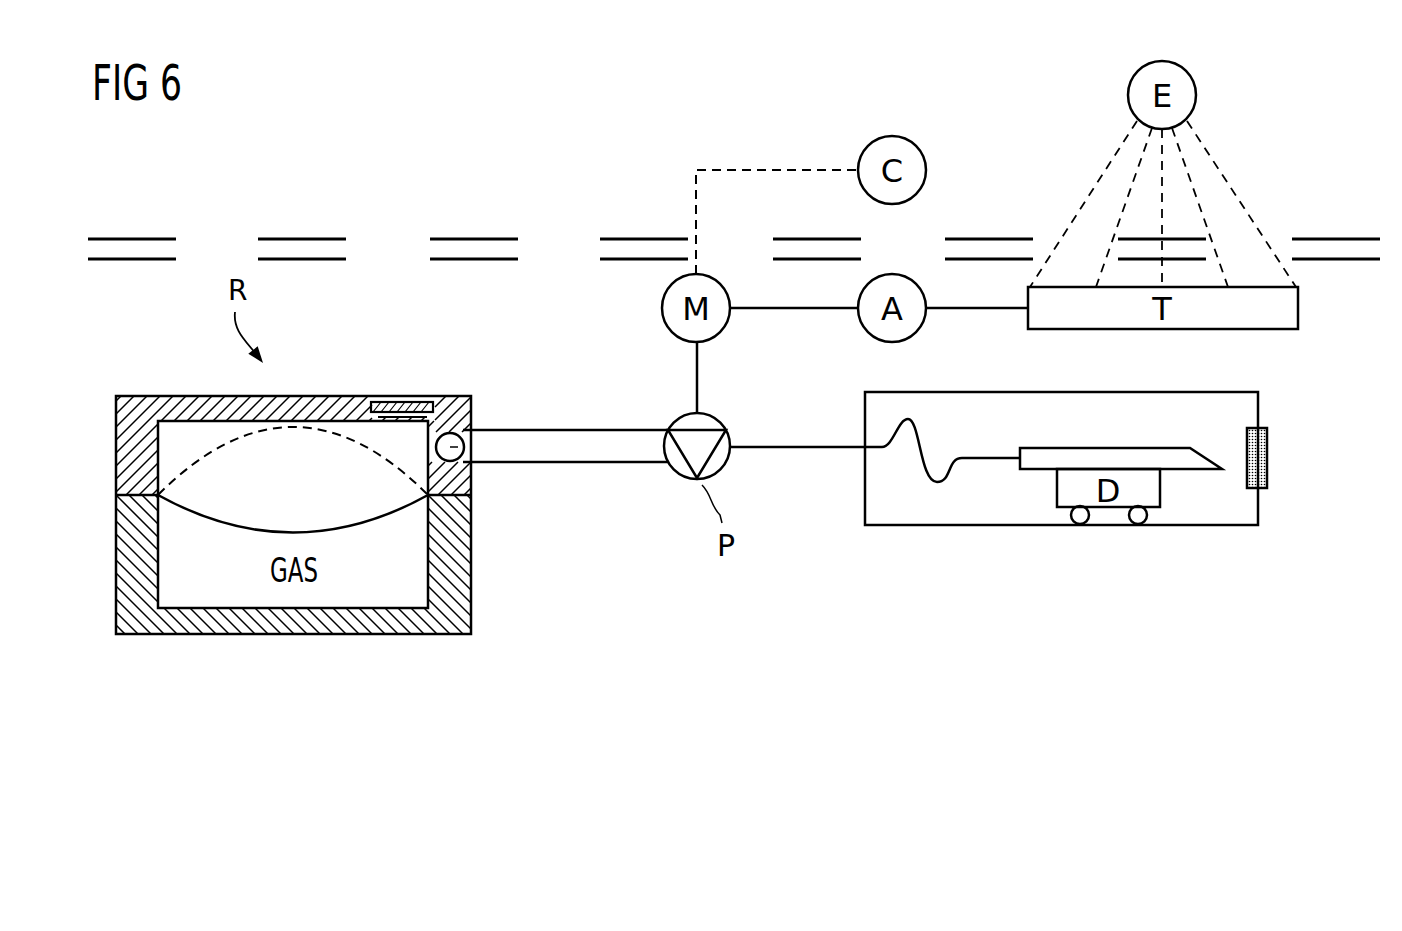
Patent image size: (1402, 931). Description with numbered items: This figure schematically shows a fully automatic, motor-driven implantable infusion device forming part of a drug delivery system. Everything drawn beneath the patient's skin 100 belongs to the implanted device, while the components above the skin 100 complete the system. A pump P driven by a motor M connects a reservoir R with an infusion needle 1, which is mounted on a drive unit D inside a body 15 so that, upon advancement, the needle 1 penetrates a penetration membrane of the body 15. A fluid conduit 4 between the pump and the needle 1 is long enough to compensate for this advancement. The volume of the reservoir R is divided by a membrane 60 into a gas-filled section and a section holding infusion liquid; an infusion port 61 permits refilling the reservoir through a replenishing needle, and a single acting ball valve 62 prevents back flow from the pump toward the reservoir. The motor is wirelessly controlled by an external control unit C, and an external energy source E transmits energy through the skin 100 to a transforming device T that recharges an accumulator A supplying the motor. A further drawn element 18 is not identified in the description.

The patient's skin 100 is at (309, 239).
The membrane 60 is at (383, 520).
The infusion port 61 is at (404, 400).
The single acting ball valve 62 is at (465, 440).
The body 15 is at (1258, 408).
The fluid conduit 4 is at (925, 442).
The infusion needle 1 is at (1093, 456).
The window 18 is at (1267, 456).